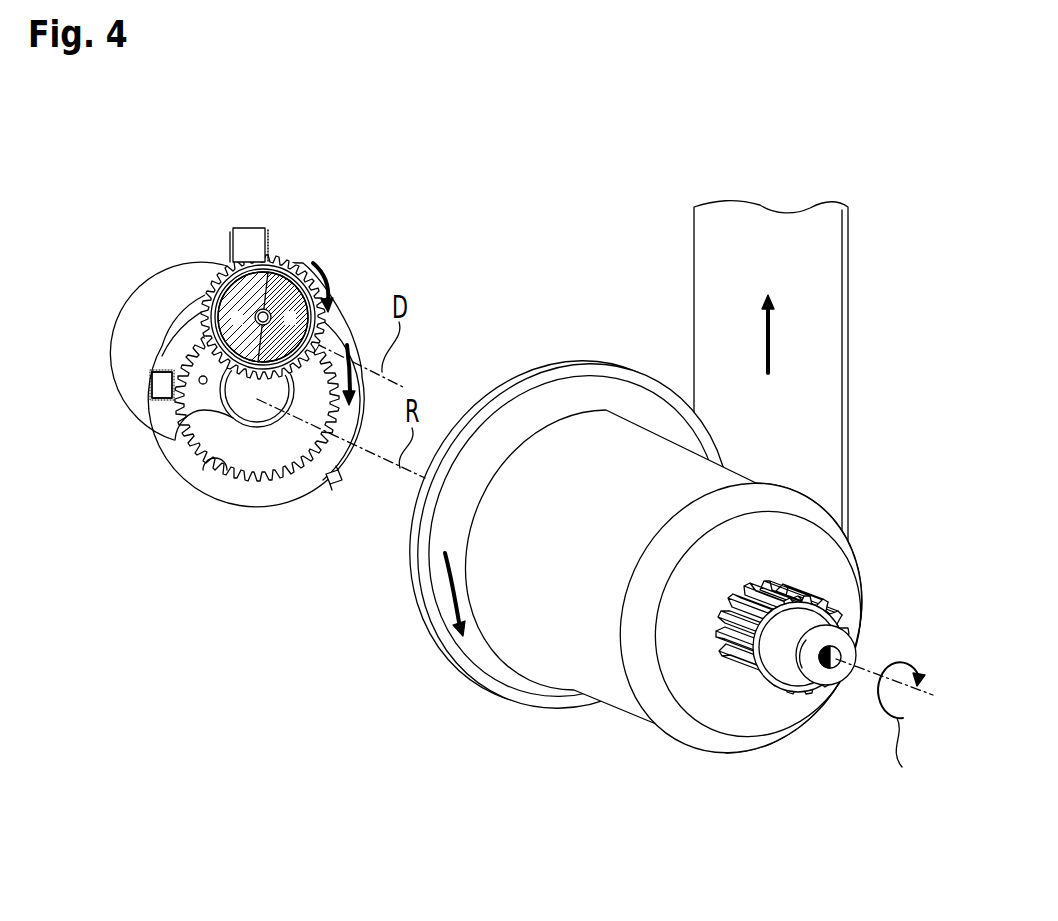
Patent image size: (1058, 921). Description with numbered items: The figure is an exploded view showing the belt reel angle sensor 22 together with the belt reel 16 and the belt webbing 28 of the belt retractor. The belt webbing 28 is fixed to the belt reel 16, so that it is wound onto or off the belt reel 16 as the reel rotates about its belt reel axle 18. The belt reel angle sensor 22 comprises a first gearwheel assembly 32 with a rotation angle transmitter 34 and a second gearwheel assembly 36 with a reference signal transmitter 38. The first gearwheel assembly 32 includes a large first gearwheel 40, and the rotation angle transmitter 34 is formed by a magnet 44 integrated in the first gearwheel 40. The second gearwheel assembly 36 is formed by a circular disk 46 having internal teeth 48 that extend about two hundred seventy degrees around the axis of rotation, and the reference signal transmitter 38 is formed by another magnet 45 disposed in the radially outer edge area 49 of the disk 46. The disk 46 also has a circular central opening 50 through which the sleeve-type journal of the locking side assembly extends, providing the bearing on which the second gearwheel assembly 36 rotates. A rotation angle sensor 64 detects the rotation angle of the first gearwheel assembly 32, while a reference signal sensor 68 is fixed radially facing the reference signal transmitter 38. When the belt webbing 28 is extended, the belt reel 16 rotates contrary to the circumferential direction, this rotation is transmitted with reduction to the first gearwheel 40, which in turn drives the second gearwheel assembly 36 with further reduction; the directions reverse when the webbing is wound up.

The belt reel 16 is at (725, 710).
The belt reel axle 18 is at (830, 660).
The belt reel angle sensor 22 is at (136, 190).
The belt webbing 28 is at (712, 252).
The first gearwheel assembly 32 is at (304, 262).
The rotation angle transmitter 34 is at (290, 300).
The second gearwheel assembly 36 is at (160, 478).
The reference signal transmitter 38 is at (158, 392).
The first gearwheel 40 is at (205, 322).
The magnet 44 is at (263, 317).
The magnet 45 is at (162, 385).
The circular disk 46 is at (175, 345).
The internal teeth 48 is at (218, 462).
The radially outer edge area 49 is at (165, 428).
The circular central opening 50 is at (262, 408).
The rotation angle sensor 64 is at (248, 228).
The reference signal sensor 68 is at (338, 486).